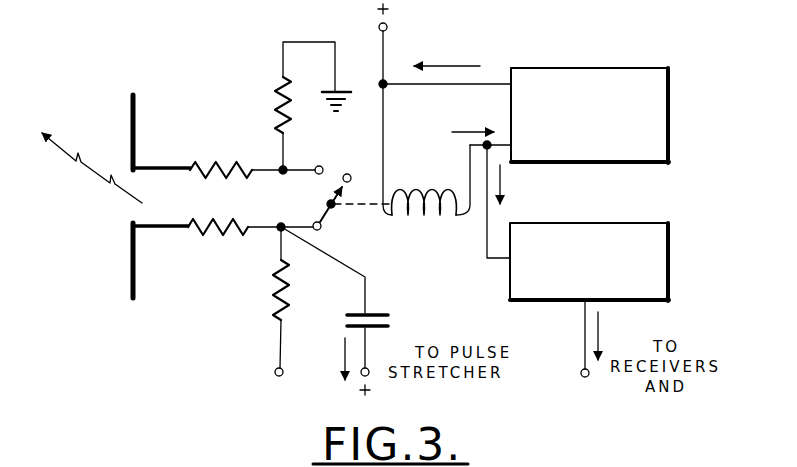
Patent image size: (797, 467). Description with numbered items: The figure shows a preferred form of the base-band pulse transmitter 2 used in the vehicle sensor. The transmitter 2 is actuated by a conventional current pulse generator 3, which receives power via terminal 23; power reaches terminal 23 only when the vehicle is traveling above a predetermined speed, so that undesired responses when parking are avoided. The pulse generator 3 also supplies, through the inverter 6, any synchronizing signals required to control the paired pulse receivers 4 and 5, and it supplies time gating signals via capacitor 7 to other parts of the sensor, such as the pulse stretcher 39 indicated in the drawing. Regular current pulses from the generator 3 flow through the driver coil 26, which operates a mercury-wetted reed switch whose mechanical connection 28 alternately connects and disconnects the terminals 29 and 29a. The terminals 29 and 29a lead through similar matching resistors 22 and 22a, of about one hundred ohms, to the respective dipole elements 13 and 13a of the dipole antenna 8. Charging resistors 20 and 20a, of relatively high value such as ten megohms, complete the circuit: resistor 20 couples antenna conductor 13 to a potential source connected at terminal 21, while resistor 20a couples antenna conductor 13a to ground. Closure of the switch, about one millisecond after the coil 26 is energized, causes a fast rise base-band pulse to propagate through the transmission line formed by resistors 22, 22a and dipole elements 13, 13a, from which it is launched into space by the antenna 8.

The base-band pulse transmitter 2 is at (247, 260).
The current pulse generator 3 is at (668, 124).
The pulse receiver 4 is at (640, 396).
The pulse receiver 5 is at (710, 396).
The inverter 6 is at (668, 262).
The capacitor 7 is at (388, 318).
The dipole antenna 8 is at (92, 205).
The dipole element 13 is at (132, 273).
The dipole element 13a is at (132, 122).
The charging resistor 20 is at (273, 313).
The charging resistor 20a is at (283, 78).
The terminal 21 is at (282, 370).
The matching resistor 22 is at (210, 238).
The matching resistor 22a is at (212, 166).
The terminal 23 is at (388, 25).
The coil 26 is at (428, 191).
The mechanical connection 28 is at (357, 202).
The terminal 29 is at (322, 229).
The terminal 29a is at (320, 166).
The pulse stretcher 39 is at (542, 383).